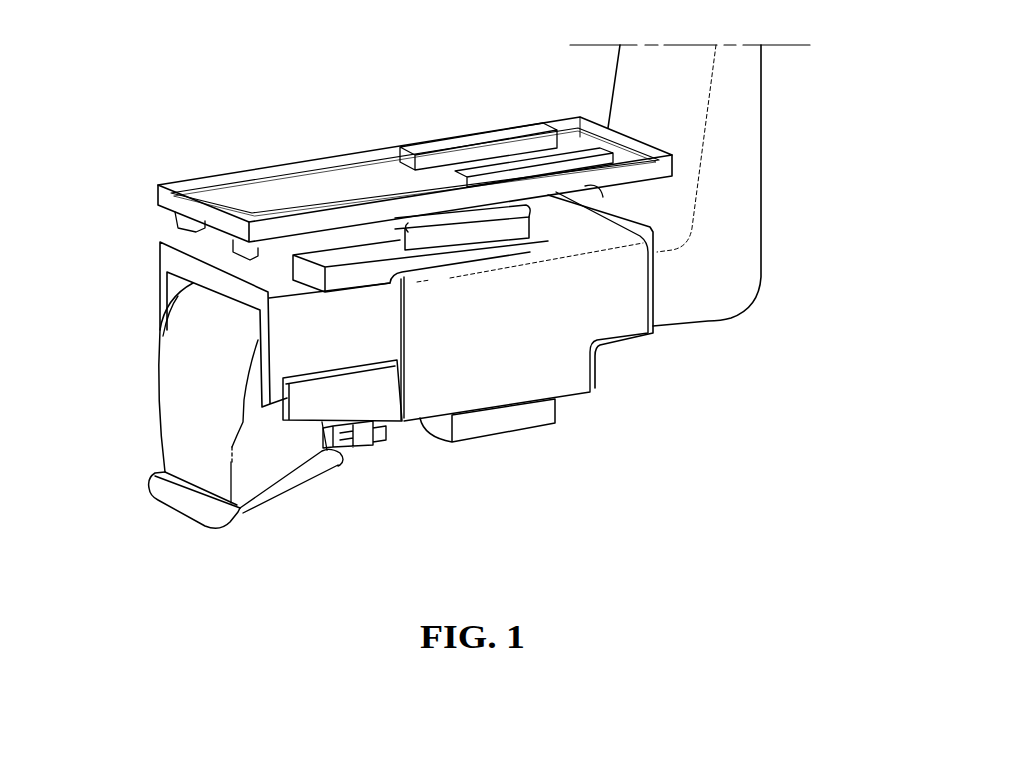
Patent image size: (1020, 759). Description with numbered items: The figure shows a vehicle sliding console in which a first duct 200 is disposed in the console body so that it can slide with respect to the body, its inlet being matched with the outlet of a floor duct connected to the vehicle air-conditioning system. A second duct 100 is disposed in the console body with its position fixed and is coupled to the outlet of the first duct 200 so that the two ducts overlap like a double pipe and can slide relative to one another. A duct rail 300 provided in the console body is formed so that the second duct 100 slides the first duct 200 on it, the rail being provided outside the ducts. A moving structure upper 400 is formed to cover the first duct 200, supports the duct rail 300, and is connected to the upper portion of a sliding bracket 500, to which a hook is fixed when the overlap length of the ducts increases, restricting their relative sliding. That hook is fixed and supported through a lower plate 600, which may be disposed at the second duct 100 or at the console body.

The second duct 100 is at (735, 190).
The first duct 200 is at (195, 338).
The duct rail 300 is at (455, 235).
The moving structure upper 400 is at (343, 256).
The sliding bracket 500 is at (362, 413).
The lower plate 600 is at (514, 418).